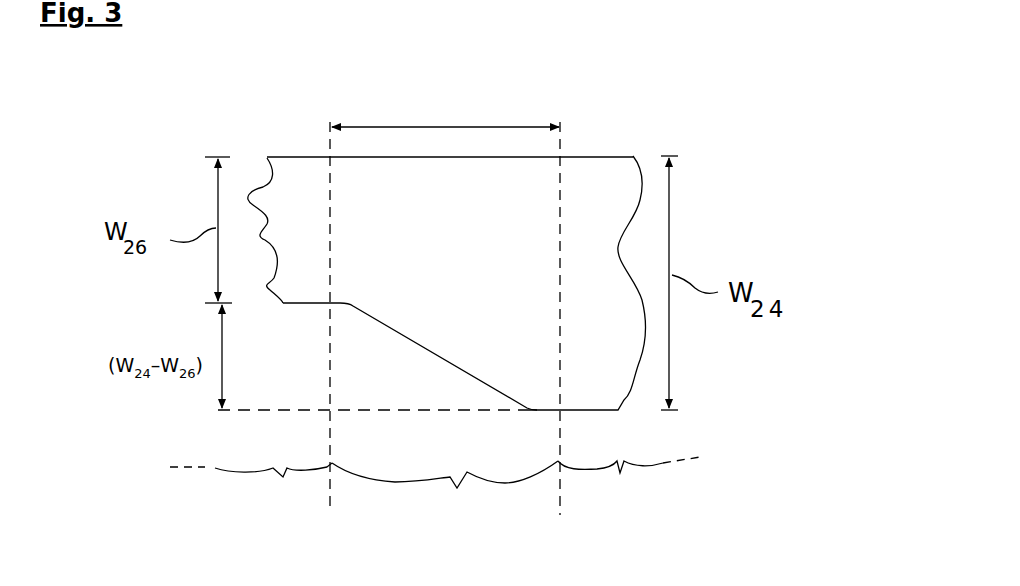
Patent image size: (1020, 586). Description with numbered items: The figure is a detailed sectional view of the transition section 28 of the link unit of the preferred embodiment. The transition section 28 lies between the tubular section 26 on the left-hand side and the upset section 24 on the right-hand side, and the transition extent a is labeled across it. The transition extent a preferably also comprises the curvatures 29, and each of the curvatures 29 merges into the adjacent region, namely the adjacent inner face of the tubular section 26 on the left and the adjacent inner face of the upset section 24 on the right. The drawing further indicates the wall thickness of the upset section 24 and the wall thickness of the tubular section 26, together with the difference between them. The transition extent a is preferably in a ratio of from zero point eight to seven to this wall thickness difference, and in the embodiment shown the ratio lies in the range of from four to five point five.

The transition extent a is at (446, 118).
The upset section 24 is at (620, 476).
The tubular section 26 is at (284, 480).
The transition section 28 is at (458, 490).
The curvatures 29 is at (360, 310).